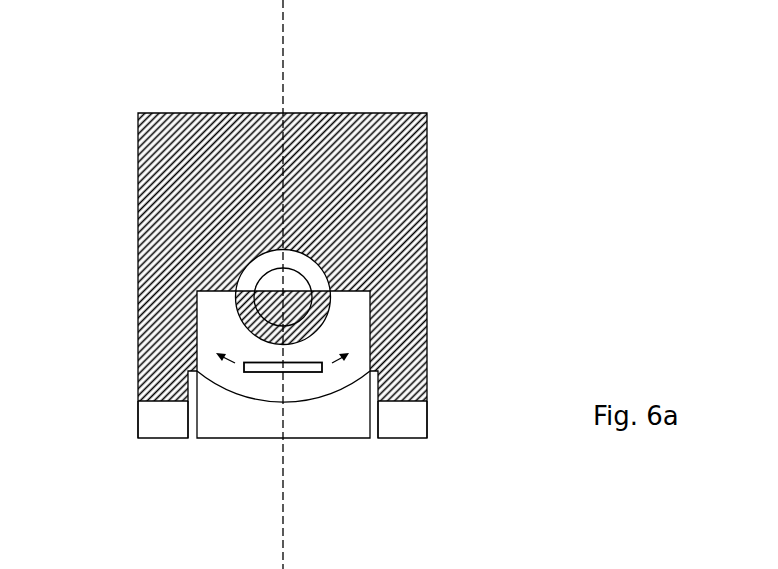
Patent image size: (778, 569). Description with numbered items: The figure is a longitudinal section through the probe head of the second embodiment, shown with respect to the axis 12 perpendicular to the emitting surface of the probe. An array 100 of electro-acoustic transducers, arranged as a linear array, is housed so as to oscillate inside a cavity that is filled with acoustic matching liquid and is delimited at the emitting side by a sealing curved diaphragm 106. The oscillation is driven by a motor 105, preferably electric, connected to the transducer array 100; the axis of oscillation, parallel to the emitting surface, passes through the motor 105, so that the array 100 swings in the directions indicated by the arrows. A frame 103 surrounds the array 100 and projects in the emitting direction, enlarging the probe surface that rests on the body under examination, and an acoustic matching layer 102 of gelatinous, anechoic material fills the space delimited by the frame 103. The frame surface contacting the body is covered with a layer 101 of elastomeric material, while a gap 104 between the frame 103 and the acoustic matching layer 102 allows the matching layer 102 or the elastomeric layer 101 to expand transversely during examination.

The axis perpendicular to the emitting surface of the probe 12 is at (283, 43).
The array of electro-acoustic transducers 100 is at (262, 372).
The layer made of elastomeric material 101 is at (138, 437).
The acoustic matching layer 102 is at (307, 439).
The frame 103 is at (138, 394).
The gap 104 is at (192, 428).
The motor 105 is at (302, 265).
The sealing curved diaphragm 106 is at (352, 378).